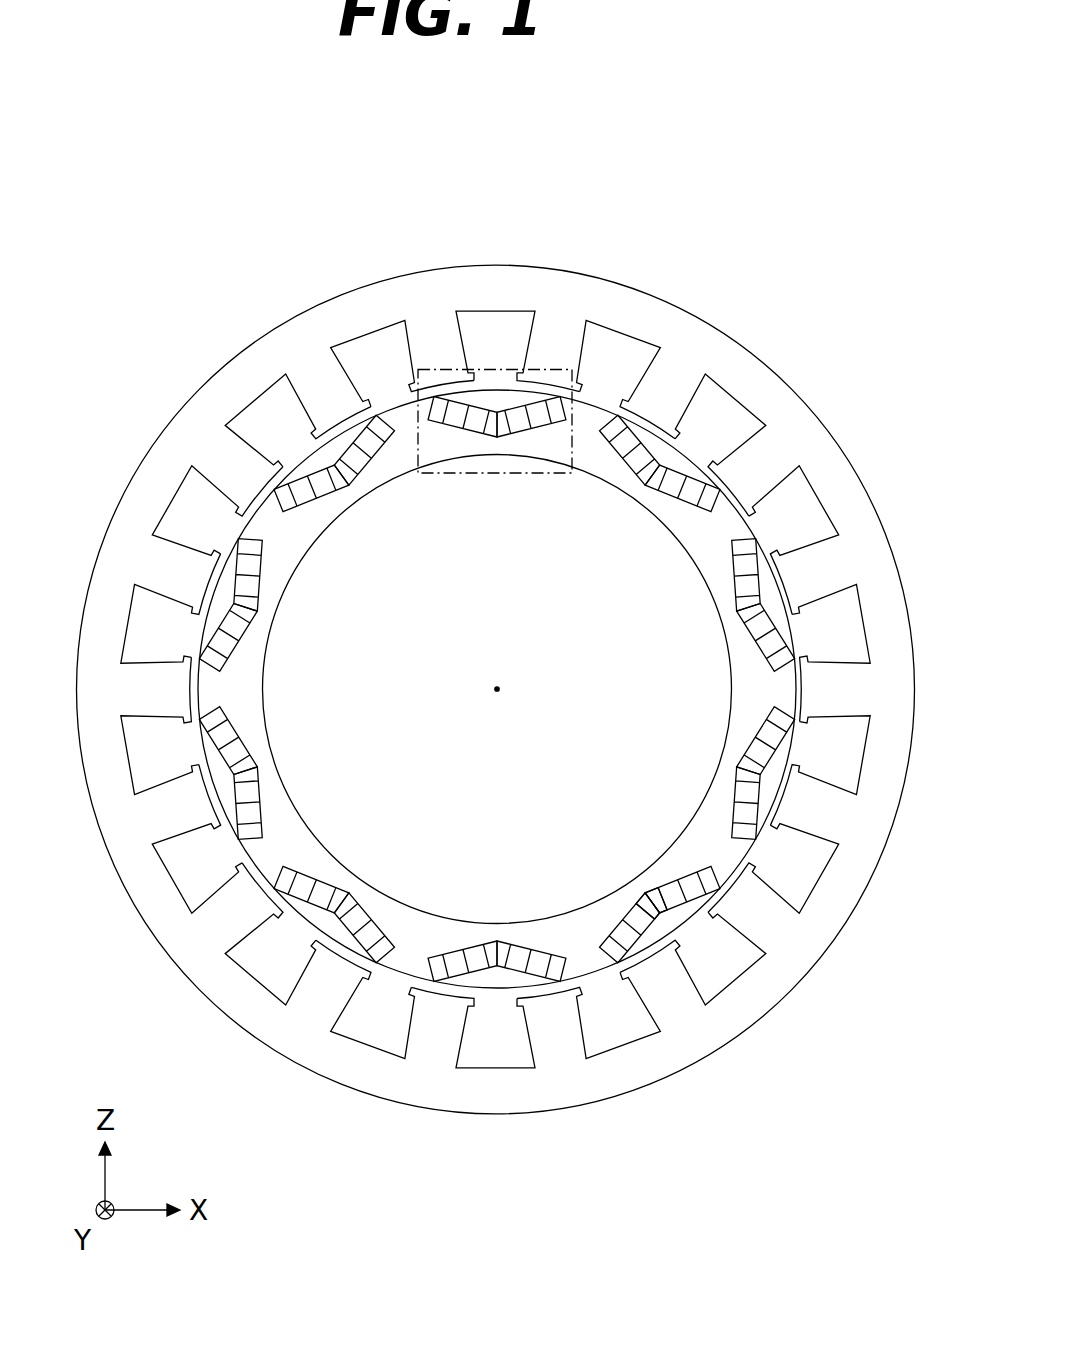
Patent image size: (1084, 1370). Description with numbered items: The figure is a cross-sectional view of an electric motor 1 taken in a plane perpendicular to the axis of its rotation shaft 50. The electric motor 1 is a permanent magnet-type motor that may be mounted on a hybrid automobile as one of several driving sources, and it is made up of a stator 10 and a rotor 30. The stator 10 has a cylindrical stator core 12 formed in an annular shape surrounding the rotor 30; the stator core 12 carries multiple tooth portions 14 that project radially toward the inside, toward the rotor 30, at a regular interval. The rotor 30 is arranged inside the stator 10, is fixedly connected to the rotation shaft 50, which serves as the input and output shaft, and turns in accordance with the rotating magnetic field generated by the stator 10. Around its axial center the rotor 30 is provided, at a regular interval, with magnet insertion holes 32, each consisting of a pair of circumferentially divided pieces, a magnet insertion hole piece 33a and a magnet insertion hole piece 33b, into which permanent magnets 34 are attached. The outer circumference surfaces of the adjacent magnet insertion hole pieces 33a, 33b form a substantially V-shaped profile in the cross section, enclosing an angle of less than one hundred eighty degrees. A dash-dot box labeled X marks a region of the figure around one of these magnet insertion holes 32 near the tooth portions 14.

The electric motor 1 is at (119, 223).
The stator 10 is at (175, 384).
The stator core 12 is at (757, 356).
The tooth portion 14 is at (213, 480).
The rotor 30 is at (315, 762).
The rotation shaft 50 is at (546, 729).
The magnet insertion hole 32 is at (873, 1150).
The magnet insertion hole piece 33a is at (627, 940).
The magnet insertion hole piece 33b is at (697, 888).
The permanent magnet 34 is at (691, 923).
The region X (enlarged portion) X is at (506, 478).